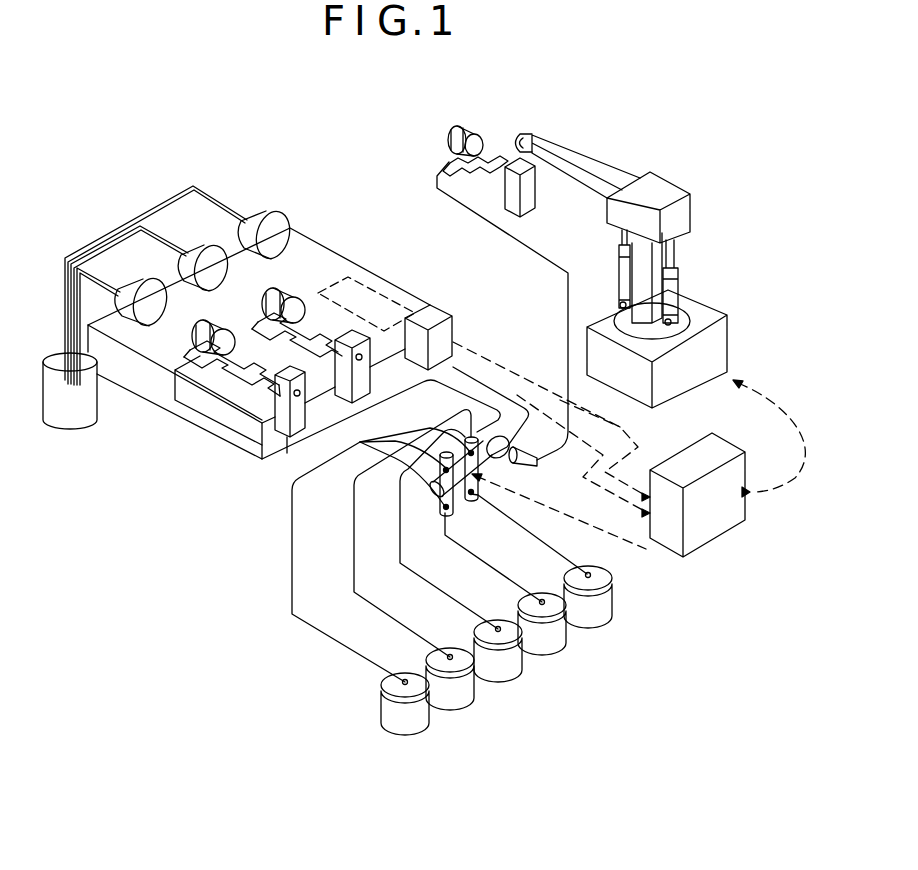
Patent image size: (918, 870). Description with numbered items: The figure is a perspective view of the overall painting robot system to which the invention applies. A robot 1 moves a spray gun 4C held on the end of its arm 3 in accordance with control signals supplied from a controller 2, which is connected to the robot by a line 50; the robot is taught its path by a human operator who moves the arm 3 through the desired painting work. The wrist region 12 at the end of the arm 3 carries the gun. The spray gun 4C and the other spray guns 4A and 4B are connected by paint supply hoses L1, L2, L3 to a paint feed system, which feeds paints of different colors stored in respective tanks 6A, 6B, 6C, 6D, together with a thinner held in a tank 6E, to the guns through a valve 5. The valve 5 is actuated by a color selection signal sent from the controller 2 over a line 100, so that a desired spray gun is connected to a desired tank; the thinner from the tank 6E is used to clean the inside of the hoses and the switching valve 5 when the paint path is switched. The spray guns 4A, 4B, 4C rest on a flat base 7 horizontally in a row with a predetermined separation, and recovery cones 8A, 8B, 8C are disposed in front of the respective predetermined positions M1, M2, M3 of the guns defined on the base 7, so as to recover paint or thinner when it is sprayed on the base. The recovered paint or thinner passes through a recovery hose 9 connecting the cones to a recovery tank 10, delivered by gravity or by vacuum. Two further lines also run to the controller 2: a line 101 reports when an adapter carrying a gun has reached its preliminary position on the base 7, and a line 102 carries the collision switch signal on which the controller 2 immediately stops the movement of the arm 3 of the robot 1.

The robot 1 is at (615, 160).
The controller 2 is at (723, 524).
The arm 3 is at (566, 148).
The spray gun 4A is at (286, 403).
The spray gun 4B is at (352, 366).
The spray gun 4C is at (468, 126).
The valve 5 is at (537, 464).
The tank 6A is at (603, 618).
The tank 6B is at (555, 643).
The tank 6C is at (508, 674).
The tank 6D is at (463, 694).
The tank 6E is at (415, 723).
The flat base 7 is at (433, 313).
The recovery cone 8A is at (138, 286).
The recovery cone 8B is at (193, 251).
The recovery cone 8C is at (265, 218).
The recovery hose 9 is at (58, 279).
The recovery tank 10 is at (93, 401).
The robot wrist 12 is at (527, 130).
The line 50 is at (777, 404).
The line 100 is at (649, 546).
The line 101 is at (620, 427).
The line 102 is at (533, 394).
The paint supply hose L1 is at (322, 458).
The paint supply hose L2 is at (457, 370).
The paint supply hose L3 is at (568, 347).
The predetermined position M1 is at (218, 307).
The predetermined position M2 is at (287, 281).
The predetermined position M3 is at (328, 263).